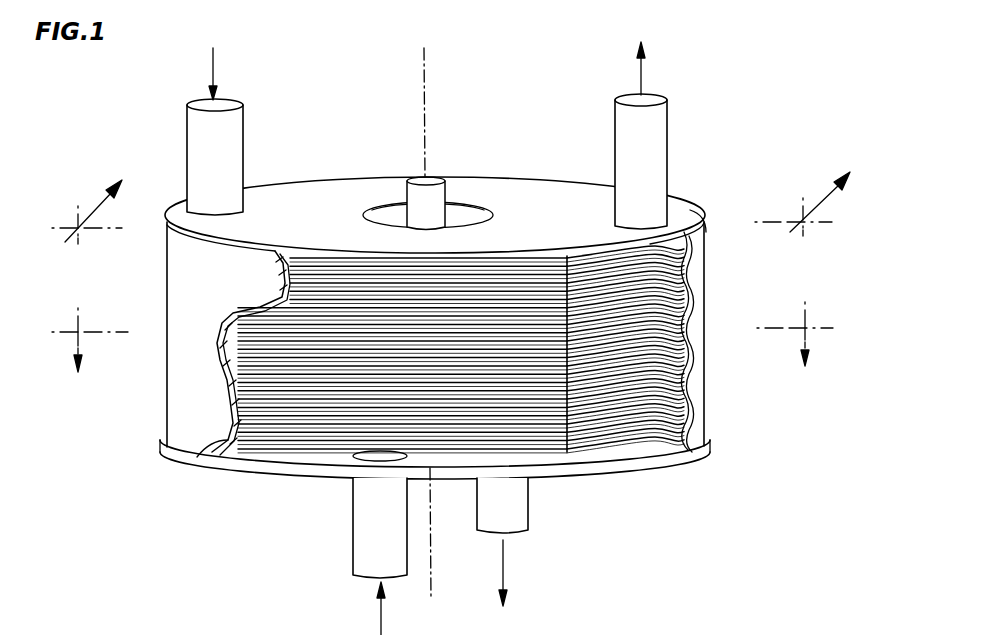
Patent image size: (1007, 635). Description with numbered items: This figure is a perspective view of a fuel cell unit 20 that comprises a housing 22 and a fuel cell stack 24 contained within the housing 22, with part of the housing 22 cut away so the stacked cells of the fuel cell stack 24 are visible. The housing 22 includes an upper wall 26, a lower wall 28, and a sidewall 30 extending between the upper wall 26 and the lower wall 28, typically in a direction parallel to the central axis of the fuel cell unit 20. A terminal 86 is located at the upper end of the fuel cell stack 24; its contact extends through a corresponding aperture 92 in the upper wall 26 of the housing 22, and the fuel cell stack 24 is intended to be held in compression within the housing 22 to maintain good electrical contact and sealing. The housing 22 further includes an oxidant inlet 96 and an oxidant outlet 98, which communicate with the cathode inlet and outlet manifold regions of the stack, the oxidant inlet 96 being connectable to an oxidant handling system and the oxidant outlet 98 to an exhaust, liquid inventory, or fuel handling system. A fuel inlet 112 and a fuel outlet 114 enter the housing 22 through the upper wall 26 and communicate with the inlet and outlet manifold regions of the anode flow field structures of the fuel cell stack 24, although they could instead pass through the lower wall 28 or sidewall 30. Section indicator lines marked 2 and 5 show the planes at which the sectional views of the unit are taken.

The fuel cell unit 20 is at (747, 493).
The housing 22 is at (166, 407).
The fuel cell stack 24 is at (576, 457).
The upper wall 26 is at (427, 105).
The lower wall 28 is at (253, 467).
The sidewall 30 is at (702, 393).
The terminal 86 is at (399, 188).
The aperture 92 is at (403, 206).
The oxidant inlet 96 is at (363, 535).
The oxidant outlet 98 is at (522, 503).
The fuel inlet 112 is at (207, 150).
The fuel outlet 114 is at (655, 148).
The section line 2- 2 is at (444, 331).
The section line 5- 5 is at (443, 215).